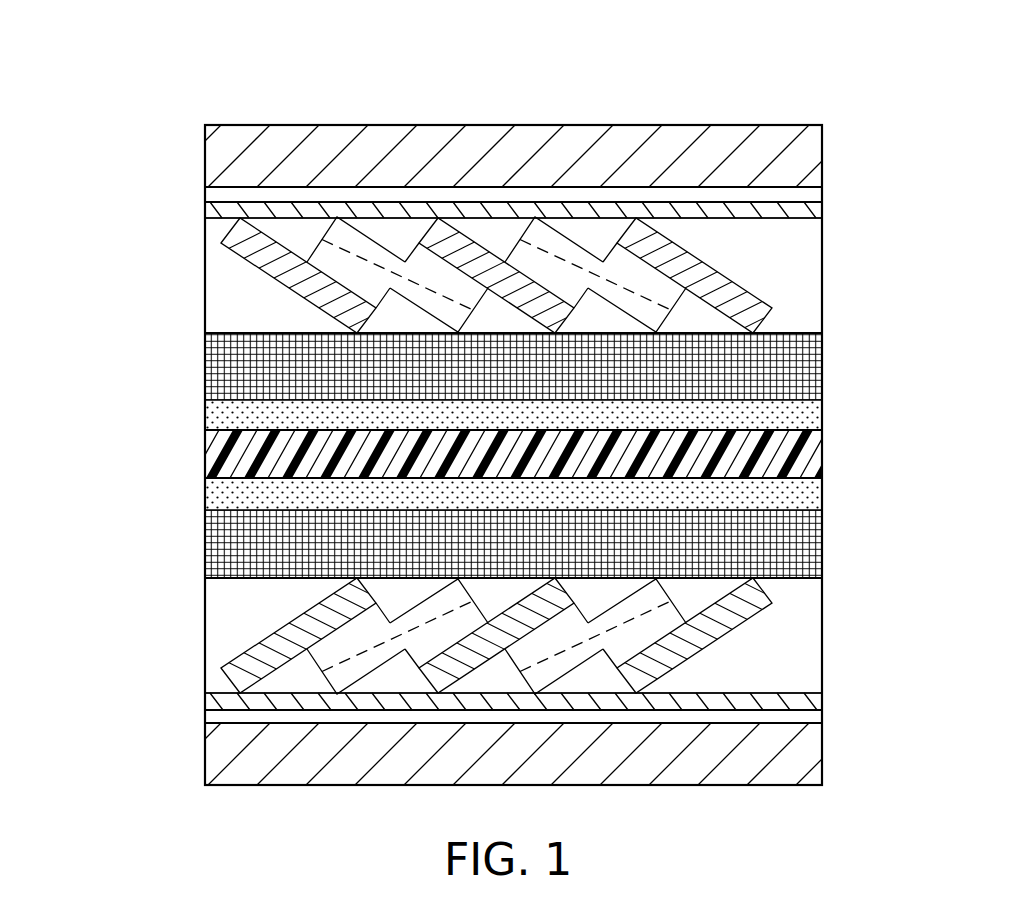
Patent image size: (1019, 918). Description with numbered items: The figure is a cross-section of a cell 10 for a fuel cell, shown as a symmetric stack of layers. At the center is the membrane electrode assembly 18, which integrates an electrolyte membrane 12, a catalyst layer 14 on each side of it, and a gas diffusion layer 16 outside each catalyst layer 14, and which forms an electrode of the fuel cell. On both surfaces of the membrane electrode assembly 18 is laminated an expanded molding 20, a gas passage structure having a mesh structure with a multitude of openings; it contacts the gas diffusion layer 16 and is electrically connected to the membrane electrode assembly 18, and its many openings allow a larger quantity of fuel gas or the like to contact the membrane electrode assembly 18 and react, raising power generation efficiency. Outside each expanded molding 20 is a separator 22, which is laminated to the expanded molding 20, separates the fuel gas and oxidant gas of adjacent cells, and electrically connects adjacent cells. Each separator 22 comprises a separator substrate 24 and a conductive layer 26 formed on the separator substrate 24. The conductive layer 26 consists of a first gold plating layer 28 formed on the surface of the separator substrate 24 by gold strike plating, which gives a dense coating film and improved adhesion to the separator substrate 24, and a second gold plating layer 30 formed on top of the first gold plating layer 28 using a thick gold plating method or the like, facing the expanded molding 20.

The cell for a fuel cell 10 is at (178, 128).
The electrolyte membrane 12 is at (815, 451).
The catalyst layer 14 is at (813, 411).
The gas diffusion layer 16 is at (813, 363).
The membrane electrode assembly 18 is at (559, 455).
The expanded molding 20 is at (713, 266).
The separator 22 is at (602, 452).
The separator substrate 24 is at (823, 140).
The conductive layer 26 is at (574, 451).
The first gold plating layer 28 is at (823, 192).
The second gold plating layer 30 is at (823, 211).